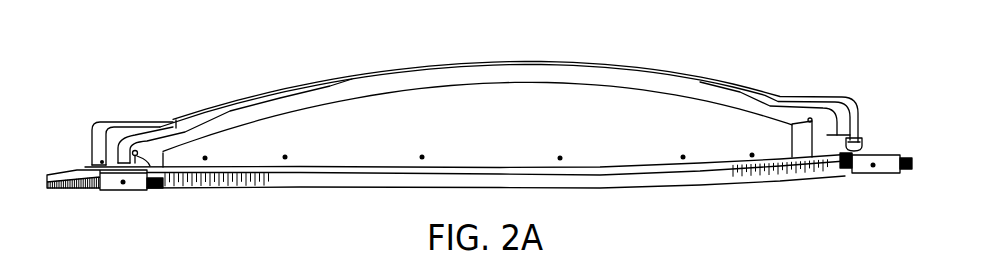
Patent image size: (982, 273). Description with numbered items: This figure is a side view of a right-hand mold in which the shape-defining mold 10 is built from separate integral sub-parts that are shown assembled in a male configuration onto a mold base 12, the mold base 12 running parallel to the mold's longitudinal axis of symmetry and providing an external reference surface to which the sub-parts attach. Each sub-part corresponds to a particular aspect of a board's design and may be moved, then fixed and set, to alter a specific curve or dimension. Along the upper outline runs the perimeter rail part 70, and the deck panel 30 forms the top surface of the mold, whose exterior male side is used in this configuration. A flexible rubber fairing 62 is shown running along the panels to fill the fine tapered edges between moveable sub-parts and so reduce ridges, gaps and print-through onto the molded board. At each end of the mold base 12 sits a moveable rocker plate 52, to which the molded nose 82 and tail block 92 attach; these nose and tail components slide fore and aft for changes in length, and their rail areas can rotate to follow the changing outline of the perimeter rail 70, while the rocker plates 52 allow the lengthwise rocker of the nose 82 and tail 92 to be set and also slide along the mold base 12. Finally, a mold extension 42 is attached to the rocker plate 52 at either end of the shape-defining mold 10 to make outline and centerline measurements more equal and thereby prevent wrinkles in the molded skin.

The shape-defining mold 10 is at (224, 83).
The mold base 12 is at (377, 187).
The deck panel 30 is at (273, 140).
The mold extension 42 is at (138, 120).
The rocker plate 52 is at (113, 192).
The flexible rubber fairing 62 is at (680, 90).
The perimeter rail part 70 is at (312, 82).
The molded nose 82 is at (138, 156).
The tail block 92 is at (815, 135).